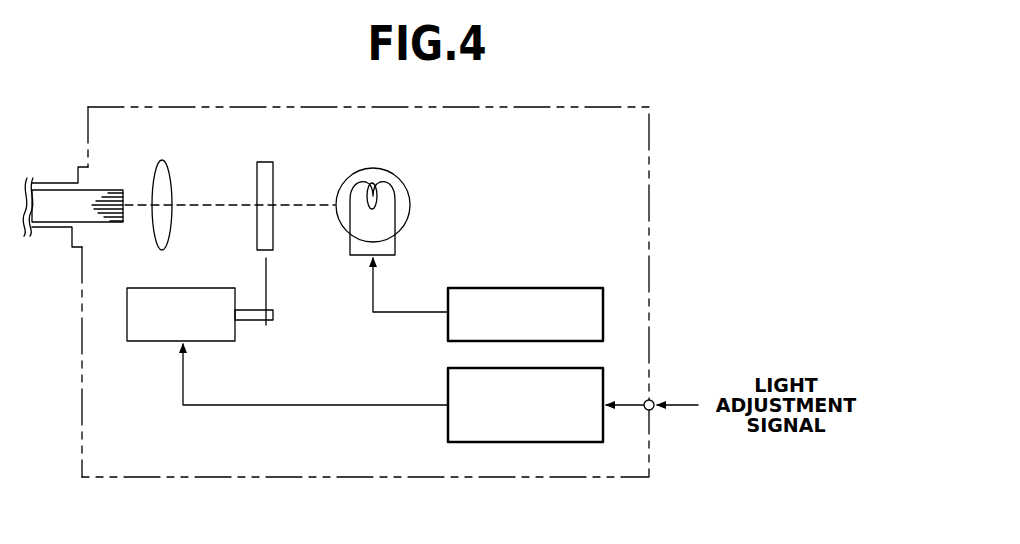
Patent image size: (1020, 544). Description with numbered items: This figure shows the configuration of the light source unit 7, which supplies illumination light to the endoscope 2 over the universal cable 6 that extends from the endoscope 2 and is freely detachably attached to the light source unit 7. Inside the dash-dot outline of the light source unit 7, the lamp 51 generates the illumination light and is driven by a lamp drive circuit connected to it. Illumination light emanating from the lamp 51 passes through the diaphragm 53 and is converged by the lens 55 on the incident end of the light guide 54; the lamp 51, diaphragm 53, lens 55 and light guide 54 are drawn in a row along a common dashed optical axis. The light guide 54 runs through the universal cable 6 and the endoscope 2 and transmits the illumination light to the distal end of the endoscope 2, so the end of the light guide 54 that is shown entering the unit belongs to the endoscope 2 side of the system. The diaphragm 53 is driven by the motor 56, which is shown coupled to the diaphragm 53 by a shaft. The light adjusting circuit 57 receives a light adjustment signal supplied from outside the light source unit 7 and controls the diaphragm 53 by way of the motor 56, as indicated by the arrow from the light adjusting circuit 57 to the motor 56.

The endoscope 2 is at (548, 288).
The universal cable 6 is at (45, 228).
The light source unit 7 is at (651, 200).
The lamp 51 is at (405, 184).
The diaphragm 53 is at (274, 172).
The light guide 54 is at (65, 193).
The lens 55 is at (170, 180).
The motor 56 is at (212, 341).
The light adjusting circuit 57 is at (492, 443).